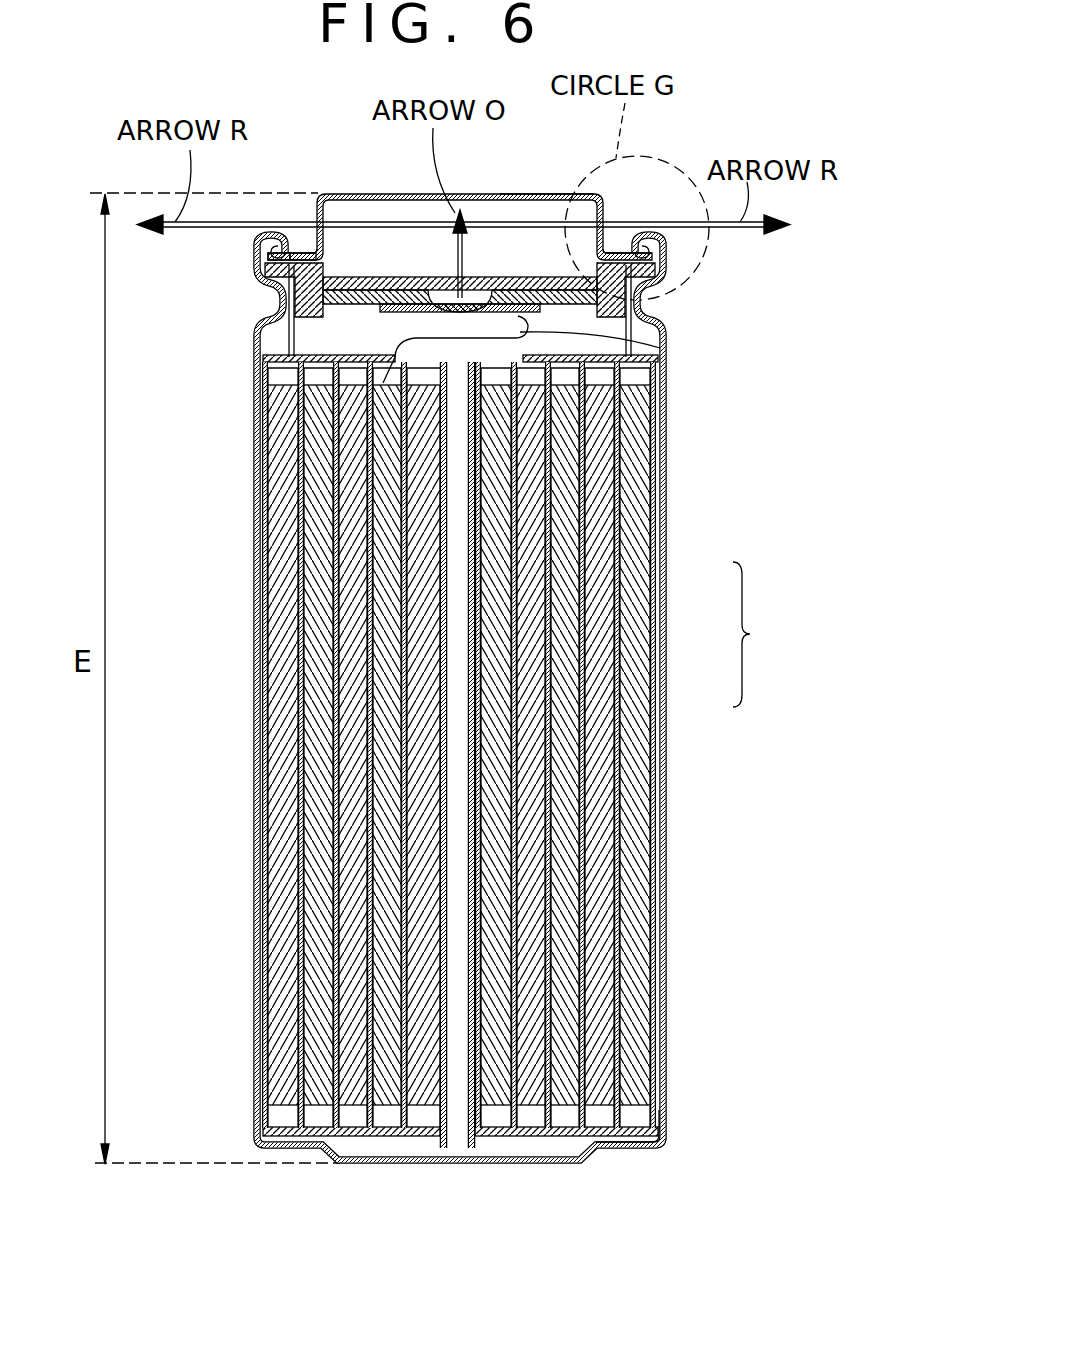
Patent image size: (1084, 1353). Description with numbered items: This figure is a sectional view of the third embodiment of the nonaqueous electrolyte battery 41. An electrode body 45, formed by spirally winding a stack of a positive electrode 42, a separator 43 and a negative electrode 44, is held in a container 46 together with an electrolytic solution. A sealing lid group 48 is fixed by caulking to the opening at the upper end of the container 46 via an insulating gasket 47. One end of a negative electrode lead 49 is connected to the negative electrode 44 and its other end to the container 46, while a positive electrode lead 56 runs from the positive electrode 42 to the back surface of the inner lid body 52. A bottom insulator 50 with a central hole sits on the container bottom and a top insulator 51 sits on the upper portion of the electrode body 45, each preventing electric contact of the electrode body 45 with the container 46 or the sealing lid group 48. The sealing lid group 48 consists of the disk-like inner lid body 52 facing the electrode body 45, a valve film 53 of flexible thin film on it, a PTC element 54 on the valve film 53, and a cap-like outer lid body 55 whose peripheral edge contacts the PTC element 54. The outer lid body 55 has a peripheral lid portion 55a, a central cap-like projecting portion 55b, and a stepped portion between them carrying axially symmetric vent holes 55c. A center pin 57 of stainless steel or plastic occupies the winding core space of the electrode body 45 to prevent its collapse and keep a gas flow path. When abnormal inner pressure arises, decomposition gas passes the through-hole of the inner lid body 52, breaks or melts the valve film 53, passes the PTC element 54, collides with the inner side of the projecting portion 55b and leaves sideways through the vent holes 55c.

The nonaqueous electrolyte battery 41 is at (691, 166).
The positive electrode 42 is at (610, 634).
The separator 43 is at (617, 685).
The negative electrode 44 is at (640, 588).
The electrode body 45 is at (762, 634).
The container 46 is at (668, 905).
The insulating gasket 47 is at (270, 248).
The sealing lid group 48 is at (346, 190).
The negative electrode lead 49 is at (352, 1140).
The bottom insulator 50 is at (666, 1131).
The top insulator 51 is at (657, 362).
The inner lid body 52 is at (640, 305).
The valve film 53 is at (393, 275).
The PTC element 54 is at (668, 262).
The outer lid body 55 is at (493, 193).
The lid portion 55a is at (303, 252).
The projecting portion 55b is at (550, 193).
The vent holes 55c is at (318, 253).
The positive electrode lead 56 is at (660, 348).
The center pin 57 is at (477, 1140).